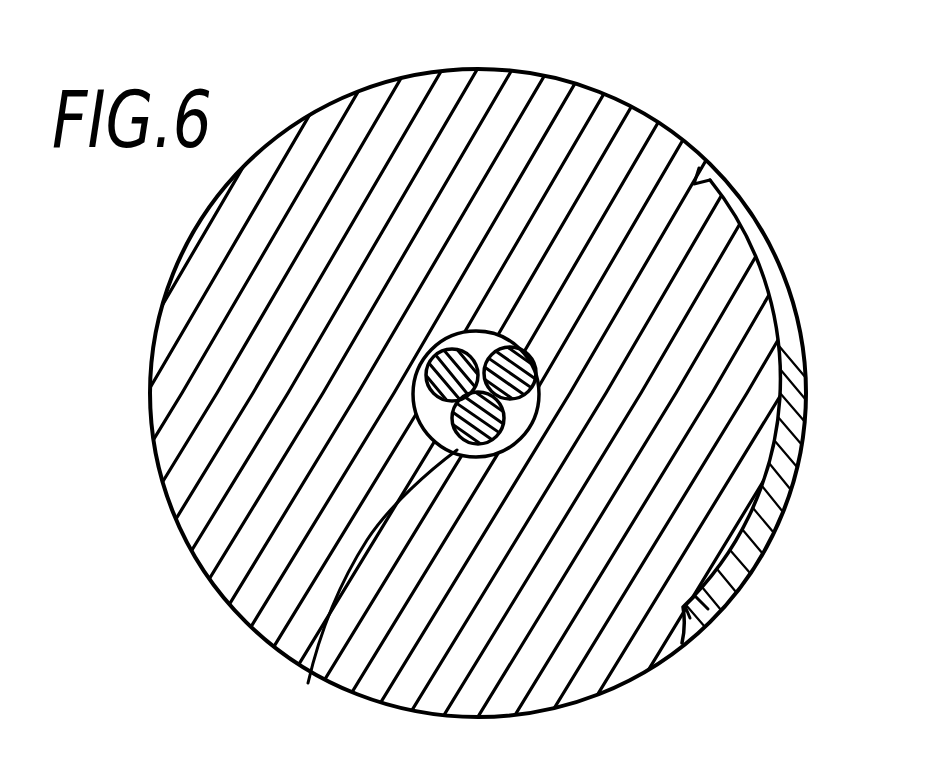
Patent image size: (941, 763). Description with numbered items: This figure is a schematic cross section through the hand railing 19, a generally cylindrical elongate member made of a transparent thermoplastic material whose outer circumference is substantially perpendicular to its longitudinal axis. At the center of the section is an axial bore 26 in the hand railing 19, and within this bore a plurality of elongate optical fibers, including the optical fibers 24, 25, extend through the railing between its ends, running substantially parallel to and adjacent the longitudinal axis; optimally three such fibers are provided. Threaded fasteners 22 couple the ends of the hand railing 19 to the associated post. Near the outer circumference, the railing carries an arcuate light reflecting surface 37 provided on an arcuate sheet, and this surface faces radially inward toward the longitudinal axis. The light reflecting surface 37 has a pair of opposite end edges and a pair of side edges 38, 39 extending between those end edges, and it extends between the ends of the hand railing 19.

The hand railing 19 is at (278, 140).
The threaded fasteners 22 is at (508, 348).
The optical fiber 24 is at (302, 672).
The optical fiber 25 is at (428, 372).
The axial bore 26 is at (433, 412).
The arcuate light reflecting surface 37 is at (777, 487).
The side edge 38 is at (698, 172).
The side edge 39 is at (682, 645).